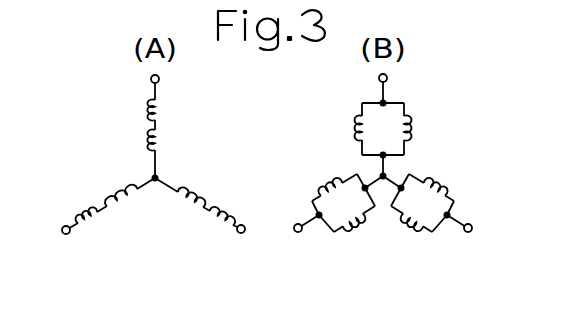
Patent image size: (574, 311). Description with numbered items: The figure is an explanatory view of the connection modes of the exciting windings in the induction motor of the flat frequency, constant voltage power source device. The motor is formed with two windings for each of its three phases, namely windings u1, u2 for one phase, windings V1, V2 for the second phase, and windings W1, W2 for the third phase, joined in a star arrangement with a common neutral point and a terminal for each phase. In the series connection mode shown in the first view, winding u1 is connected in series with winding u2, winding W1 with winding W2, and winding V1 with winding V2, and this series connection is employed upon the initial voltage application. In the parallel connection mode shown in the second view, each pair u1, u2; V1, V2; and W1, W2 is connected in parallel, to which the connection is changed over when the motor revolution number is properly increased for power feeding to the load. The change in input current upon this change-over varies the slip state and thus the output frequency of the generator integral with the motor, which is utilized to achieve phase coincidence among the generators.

In FIG. 3A, the winding u1 is at (166, 111).
In FIG. 3B, the winding u1 is at (347, 127).
In FIG. 3A, the winding u2 is at (167, 143).
In FIG. 3B, the winding u2 is at (421, 127).
In FIG. 3A, the winding V1 is at (186, 205).
In FIG. 3B, the winding V1 is at (439, 183).
In FIG. 3A, the winding V2 is at (218, 225).
In FIG. 3B, the winding V2 is at (411, 229).
In FIG. 3A, the winding W1 is at (118, 186).
In FIG. 3B, the winding W1 is at (354, 229).
In FIG. 3A, the winding W2 is at (77, 206).
In FIG. 3B, the winding W2 is at (326, 182).